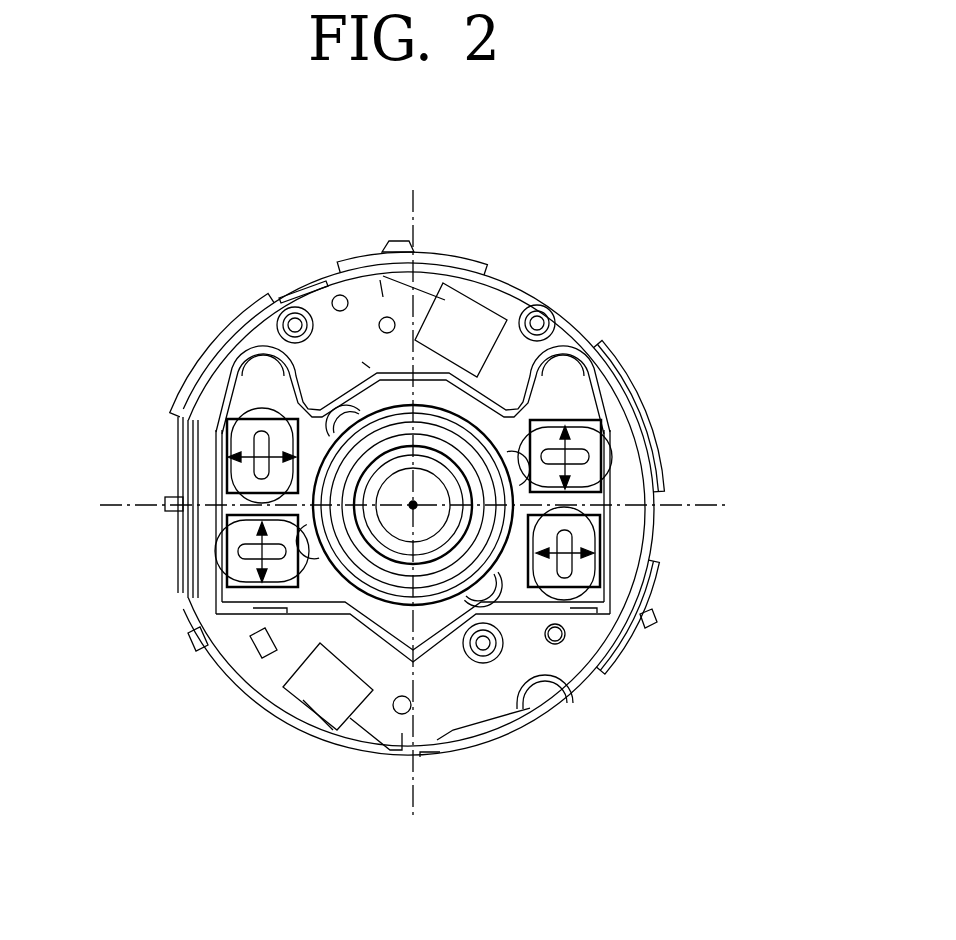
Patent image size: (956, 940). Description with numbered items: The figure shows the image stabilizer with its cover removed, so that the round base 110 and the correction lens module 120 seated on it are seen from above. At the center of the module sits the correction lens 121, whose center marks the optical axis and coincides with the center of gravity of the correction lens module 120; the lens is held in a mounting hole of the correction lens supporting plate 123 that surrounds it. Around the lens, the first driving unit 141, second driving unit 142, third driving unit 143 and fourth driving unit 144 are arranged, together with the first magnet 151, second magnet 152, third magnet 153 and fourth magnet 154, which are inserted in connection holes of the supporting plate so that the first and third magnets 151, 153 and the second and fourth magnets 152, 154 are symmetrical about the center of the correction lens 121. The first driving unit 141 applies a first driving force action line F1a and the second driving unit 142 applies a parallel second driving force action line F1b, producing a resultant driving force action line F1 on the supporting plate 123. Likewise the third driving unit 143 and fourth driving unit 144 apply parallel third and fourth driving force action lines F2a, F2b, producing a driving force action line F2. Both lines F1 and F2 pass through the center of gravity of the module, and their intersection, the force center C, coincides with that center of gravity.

The base 110 is at (606, 682).
The correction lens module 120 is at (406, 547).
The correction lens 121 is at (370, 588).
The correction lens supporting plate 123 is at (317, 588).
The first driving unit 141 is at (262, 412).
The second driving unit 142 is at (583, 570).
The third driving unit 143 is at (222, 553).
The fourth driving unit 144 is at (595, 443).
The first magnet 151 is at (228, 420).
The second magnet 152 is at (580, 610).
The third magnet 153 is at (216, 584).
The fourth magnet 154 is at (593, 418).
The force center C is at (415, 503).
The driving force action line F1 is at (430, 502).
The driving force action line F2 is at (414, 489).
The first driving force action line F1a is at (232, 457).
The second driving force action line F1b is at (597, 532).
The third driving force action line F2a is at (232, 532).
The fourth driving force action line F2b is at (580, 467).